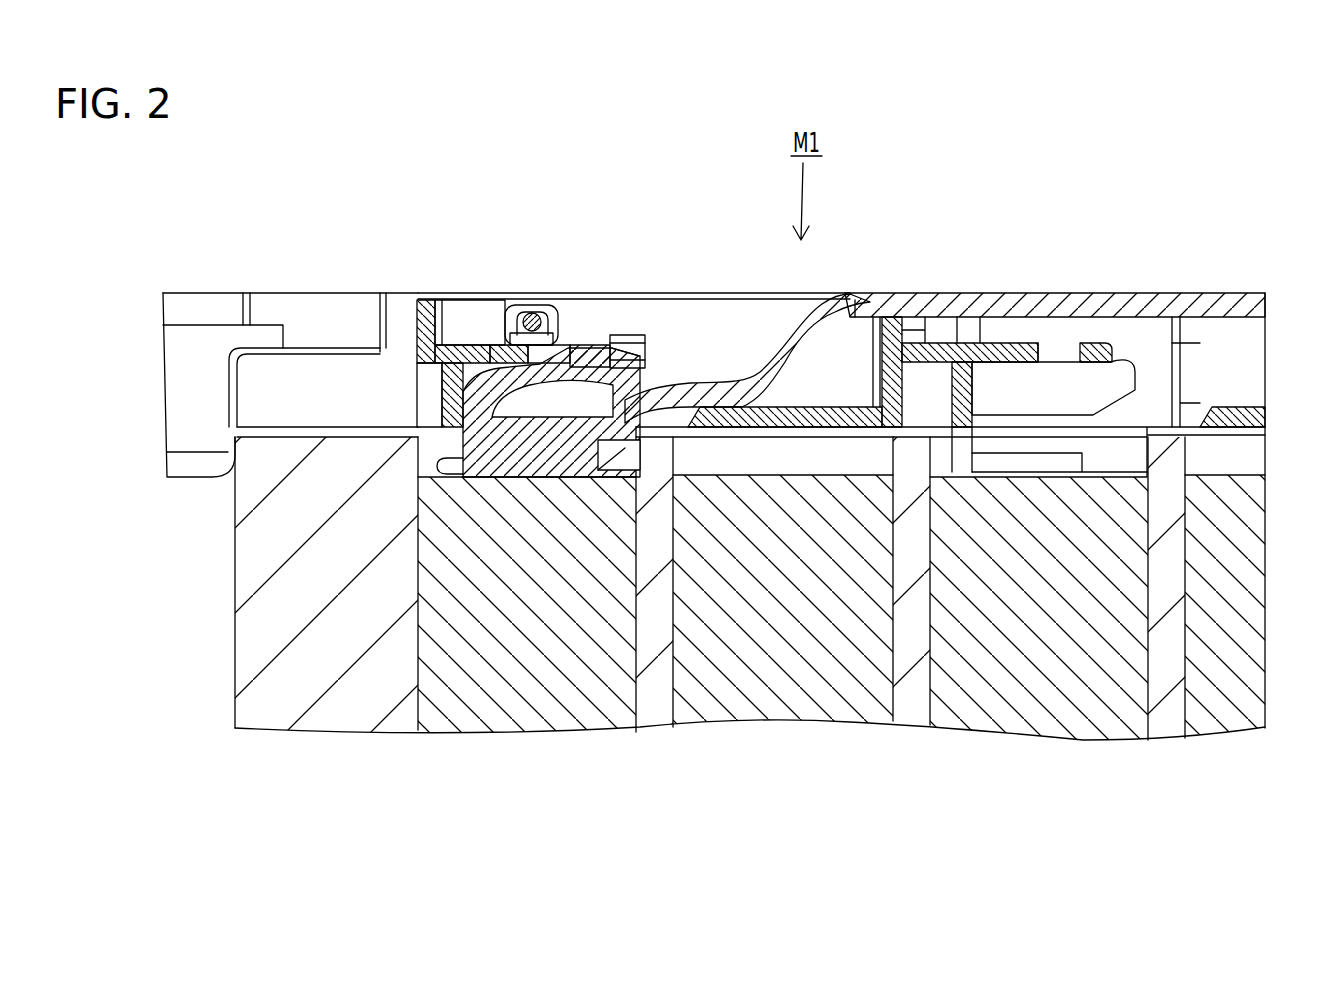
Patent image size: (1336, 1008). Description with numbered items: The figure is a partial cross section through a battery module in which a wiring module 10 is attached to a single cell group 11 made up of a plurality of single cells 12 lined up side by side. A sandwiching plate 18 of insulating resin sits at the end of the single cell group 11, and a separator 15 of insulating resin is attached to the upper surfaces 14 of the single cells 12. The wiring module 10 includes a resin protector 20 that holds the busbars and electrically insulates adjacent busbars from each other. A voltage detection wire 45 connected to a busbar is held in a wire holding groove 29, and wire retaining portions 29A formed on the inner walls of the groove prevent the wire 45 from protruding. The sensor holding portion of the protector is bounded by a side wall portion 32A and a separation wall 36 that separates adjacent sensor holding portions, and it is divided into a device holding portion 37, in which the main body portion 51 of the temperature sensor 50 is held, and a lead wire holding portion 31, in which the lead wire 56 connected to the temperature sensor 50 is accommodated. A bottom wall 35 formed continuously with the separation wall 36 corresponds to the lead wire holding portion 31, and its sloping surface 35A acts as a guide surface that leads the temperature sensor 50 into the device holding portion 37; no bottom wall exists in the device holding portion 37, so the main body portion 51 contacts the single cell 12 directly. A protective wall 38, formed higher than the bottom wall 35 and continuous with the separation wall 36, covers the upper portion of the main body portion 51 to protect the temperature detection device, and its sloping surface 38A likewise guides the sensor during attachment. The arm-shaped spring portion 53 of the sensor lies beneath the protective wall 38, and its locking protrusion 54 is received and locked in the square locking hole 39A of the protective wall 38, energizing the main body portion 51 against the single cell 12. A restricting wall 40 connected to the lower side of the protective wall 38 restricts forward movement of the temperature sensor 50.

The wiring module 10 is at (207, 293).
The resin protector 20 is at (299, 293).
The single cell group 11 is at (655, 722).
The single cell 12 is at (750, 636).
The upper surface 14 is at (1124, 477).
The separator 15 is at (1180, 592).
The sandwiching plate 18 is at (237, 633).
The wire holding groove 29 is at (535, 242).
The wire retaining portion 29A is at (515, 304).
The lead wire holding portion 31 is at (861, 346).
The side wall portion 32A is at (777, 293).
The bottom wall 35 is at (824, 406).
The sloping surface 35A is at (693, 407).
The separation wall 36 is at (425, 305).
The device holding portion 37 is at (626, 384).
The protective wall 38 is at (484, 350).
The sloping surface 38A is at (640, 337).
The locking hole 39A is at (576, 347).
The restricting wall 40 is at (455, 366).
The voltage detection wire 45 is at (531, 313).
The temperature sensor 50 is at (490, 388).
The main body portion 51 is at (437, 430).
The spring portion 53 is at (537, 326).
The locking protrusion 54 is at (566, 344).
The lead wire 56 is at (1033, 362).